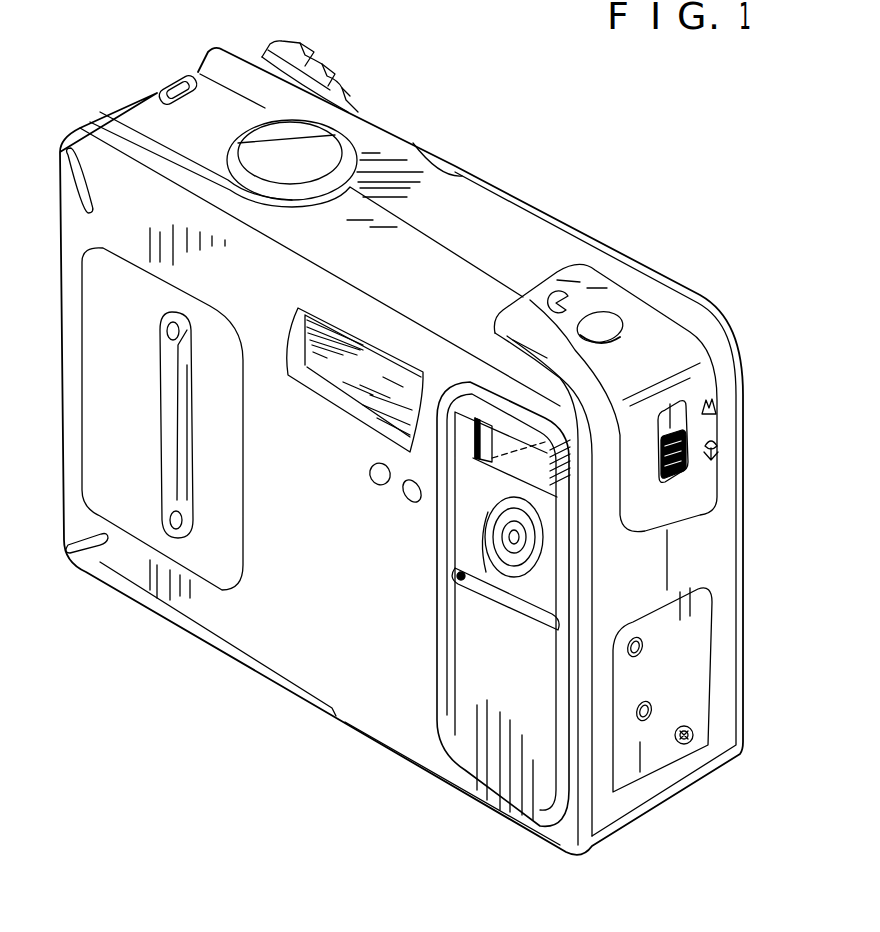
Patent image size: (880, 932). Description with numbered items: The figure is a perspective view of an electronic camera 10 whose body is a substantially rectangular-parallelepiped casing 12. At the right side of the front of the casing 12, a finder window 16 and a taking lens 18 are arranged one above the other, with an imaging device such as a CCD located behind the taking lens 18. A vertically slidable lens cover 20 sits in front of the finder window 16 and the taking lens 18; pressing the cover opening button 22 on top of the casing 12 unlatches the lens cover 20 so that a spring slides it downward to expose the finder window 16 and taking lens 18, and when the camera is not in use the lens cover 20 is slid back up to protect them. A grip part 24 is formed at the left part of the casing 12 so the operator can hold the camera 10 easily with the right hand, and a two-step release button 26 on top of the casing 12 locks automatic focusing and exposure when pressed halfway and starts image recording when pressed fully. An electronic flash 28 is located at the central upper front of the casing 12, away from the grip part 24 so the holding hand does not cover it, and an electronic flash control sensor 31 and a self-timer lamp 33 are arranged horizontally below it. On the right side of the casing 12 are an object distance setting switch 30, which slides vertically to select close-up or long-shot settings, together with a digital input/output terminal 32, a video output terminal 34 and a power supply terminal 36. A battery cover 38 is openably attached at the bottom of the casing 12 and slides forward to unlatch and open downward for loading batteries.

The electronic camera 10 is at (460, 82).
The casing 12 is at (440, 193).
The finder window 16 is at (503, 440).
The taking lens 18 is at (510, 536).
The lens cover 20 is at (493, 590).
The cover opening button 22 is at (610, 327).
The grip part 24 is at (173, 446).
The release button 26 is at (305, 150).
The electronic flash 28 is at (328, 330).
The object distance setting switch 30 is at (687, 463).
The electronic flash control sensor 31 is at (371, 473).
The digital input/output terminal 32 is at (640, 637).
The self-timer lamp 33 is at (402, 492).
The video output terminal 34 is at (648, 693).
The power supply terminal 36 is at (688, 745).
The battery cover 38 is at (230, 652).